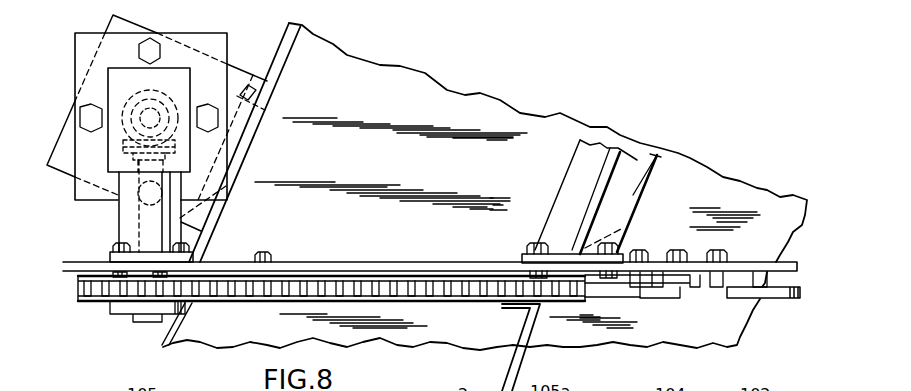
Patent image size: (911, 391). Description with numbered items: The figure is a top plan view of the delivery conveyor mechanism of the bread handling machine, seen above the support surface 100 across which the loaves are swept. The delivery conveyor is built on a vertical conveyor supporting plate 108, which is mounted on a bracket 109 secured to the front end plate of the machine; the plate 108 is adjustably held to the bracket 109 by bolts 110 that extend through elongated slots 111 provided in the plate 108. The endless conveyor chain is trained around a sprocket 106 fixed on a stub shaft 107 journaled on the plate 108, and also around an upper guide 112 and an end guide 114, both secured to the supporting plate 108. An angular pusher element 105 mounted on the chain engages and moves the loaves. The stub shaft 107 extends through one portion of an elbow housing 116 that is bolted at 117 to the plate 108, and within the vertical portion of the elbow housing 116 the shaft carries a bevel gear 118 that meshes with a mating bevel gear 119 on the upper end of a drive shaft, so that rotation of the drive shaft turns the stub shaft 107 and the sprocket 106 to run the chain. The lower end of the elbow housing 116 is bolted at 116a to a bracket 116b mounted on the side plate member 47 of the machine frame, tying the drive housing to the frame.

The side plate member 47 is at (293, 44).
The support surface 100 is at (480, 115).
The angular pusher element 105 is at (512, 312).
The sprocket 106 is at (100, 305).
The stub shaft 107 is at (150, 325).
The conveyor supporting plate 108 is at (785, 263).
The bracket 109 is at (633, 194).
The bolt 110 is at (538, 250).
The elongated slot 111 is at (623, 229).
The upper guide 112 is at (662, 291).
The end guide 114 is at (783, 299).
The elbow housing 116 is at (217, 45).
The bolt 116a is at (148, 53).
The bracket 116b is at (235, 77).
The bolt 117 is at (100, 253).
The bevel gear 118 is at (190, 152).
The mating bevel gear 119 is at (127, 133).